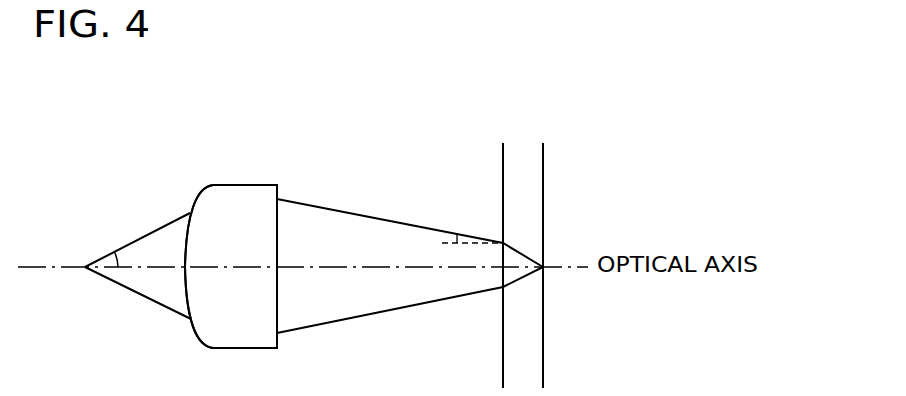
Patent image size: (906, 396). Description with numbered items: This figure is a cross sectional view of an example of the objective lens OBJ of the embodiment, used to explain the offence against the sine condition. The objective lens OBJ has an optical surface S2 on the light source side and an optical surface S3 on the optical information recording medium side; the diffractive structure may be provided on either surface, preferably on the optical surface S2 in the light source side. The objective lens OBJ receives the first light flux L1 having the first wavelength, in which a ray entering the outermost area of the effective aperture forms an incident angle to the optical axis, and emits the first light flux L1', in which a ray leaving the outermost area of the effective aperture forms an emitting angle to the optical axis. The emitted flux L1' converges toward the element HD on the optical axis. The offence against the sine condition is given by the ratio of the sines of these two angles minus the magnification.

The objective lens OBJ is at (248, 178).
The optical surface in the light source side S2 is at (204, 345).
The optical surface in the optical information recording medium side S3 is at (278, 343).
The first light flux L1 is at (138, 251).
The emitted first light flux L1' is at (410, 248).
The hologram element HD is at (524, 138).